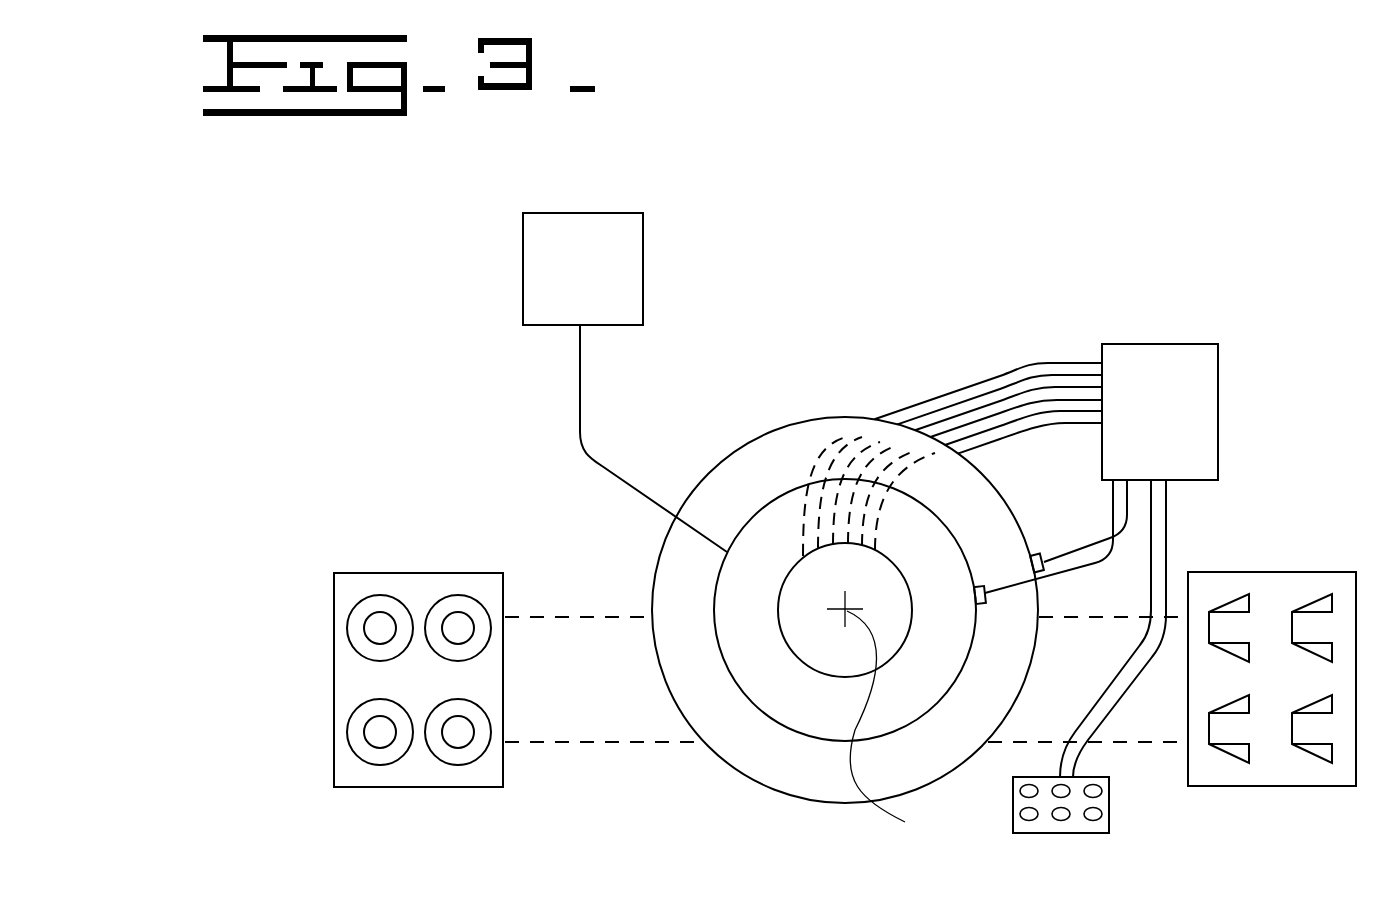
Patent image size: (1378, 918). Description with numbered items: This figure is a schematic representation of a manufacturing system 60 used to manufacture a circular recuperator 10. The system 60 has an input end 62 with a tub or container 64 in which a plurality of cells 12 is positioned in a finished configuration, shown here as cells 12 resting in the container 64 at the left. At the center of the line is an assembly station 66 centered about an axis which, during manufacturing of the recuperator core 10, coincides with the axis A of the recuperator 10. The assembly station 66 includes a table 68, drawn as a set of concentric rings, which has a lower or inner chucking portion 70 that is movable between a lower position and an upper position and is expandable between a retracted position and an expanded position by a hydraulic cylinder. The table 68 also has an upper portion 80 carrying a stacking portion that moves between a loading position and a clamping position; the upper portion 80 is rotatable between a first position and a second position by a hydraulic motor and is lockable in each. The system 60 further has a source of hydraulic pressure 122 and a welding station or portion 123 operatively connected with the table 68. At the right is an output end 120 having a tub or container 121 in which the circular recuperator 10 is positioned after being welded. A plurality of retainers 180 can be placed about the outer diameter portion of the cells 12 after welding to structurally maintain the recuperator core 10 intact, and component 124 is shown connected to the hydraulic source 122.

The recuperator 10 is at (455, 598).
The cells 12 is at (1313, 601).
The manufacturing system 60 is at (995, 308).
The input end 62 is at (1252, 509).
The tub or container 64 is at (1237, 786).
The assembly station 66 is at (772, 395).
The table 68 is at (847, 419).
The lower or inner chucking portion 70 is at (797, 602).
The upper portion 80 is at (732, 453).
The output end 120 is at (485, 450).
The tub or container 121 is at (505, 768).
The source of hydraulic pressure 122 is at (1142, 424).
The welding station or portion 123 is at (567, 281).
The sensors / connector 124 is at (986, 588).
The retainers 180 is at (438, 655).